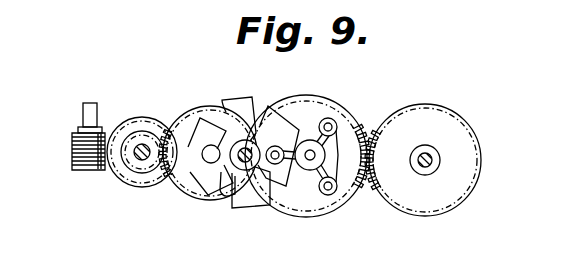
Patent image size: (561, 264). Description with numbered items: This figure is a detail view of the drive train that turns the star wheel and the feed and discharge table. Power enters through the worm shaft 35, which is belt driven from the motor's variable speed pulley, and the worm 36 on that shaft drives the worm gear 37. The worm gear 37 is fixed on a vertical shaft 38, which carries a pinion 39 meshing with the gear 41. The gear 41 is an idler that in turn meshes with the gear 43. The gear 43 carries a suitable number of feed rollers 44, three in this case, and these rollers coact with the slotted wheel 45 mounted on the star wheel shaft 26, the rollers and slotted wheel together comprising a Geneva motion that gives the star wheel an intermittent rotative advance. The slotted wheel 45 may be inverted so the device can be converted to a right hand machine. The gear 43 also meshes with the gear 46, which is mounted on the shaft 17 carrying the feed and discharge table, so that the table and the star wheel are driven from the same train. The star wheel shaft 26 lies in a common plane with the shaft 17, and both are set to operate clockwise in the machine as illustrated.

The shaft 17 is at (433, 158).
The star wheel shaft 26 is at (240, 175).
The worm shaft 35 is at (90, 112).
The worm 36 is at (72, 158).
The worm gear 37 is at (127, 192).
The vertical shaft 38 is at (142, 143).
The pinion 39 is at (152, 162).
The gear 41 is at (182, 170).
The gear 43 is at (311, 203).
The feed rollers 44 is at (309, 156).
The slotted wheel 45 is at (243, 114).
The gear 46 is at (400, 203).